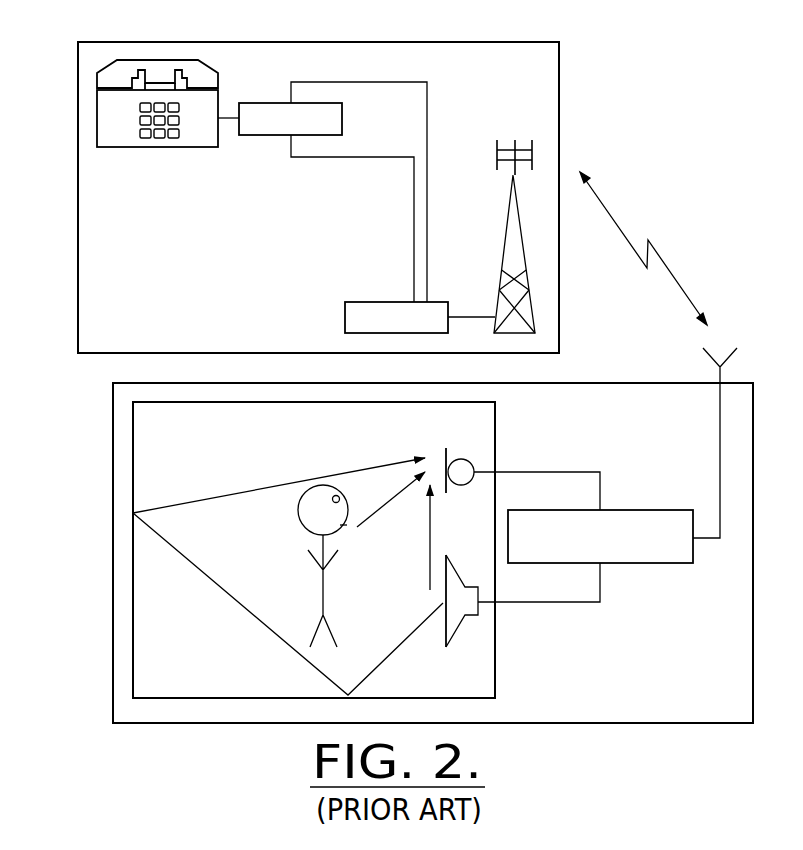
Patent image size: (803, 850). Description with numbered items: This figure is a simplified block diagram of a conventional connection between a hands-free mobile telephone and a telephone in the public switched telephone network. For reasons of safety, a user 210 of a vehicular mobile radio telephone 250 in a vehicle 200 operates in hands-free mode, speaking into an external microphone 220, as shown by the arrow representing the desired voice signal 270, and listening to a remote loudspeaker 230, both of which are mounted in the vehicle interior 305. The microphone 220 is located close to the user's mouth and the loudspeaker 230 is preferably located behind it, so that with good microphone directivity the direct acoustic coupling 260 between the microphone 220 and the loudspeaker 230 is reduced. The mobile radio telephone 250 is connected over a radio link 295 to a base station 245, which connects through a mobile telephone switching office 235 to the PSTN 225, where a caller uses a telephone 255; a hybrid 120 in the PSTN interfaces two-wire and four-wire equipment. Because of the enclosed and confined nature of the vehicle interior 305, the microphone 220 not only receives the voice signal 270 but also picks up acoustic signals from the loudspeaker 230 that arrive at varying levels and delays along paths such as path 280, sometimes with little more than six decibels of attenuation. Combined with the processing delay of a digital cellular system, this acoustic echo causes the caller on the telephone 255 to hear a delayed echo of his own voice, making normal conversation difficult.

The PSTN 225 is at (415, 42).
The telephone 255 is at (135, 147).
The hybrid 120 is at (270, 136).
The mobile telephone switching office (MTSO) 235 is at (373, 302).
The base station 245 is at (497, 142).
The radio link 295 is at (670, 270).
The vehicle 200 is at (113, 472).
The vehicle interior 305 is at (495, 665).
The path 280 is at (250, 488).
The user 210 is at (322, 588).
The voice signal 270 is at (387, 505).
The direct acoustic coupling 260 is at (430, 582).
The microphone 220 is at (463, 425).
The loudspeaker 230 is at (457, 632).
The mobile radio telephone 250 is at (657, 510).